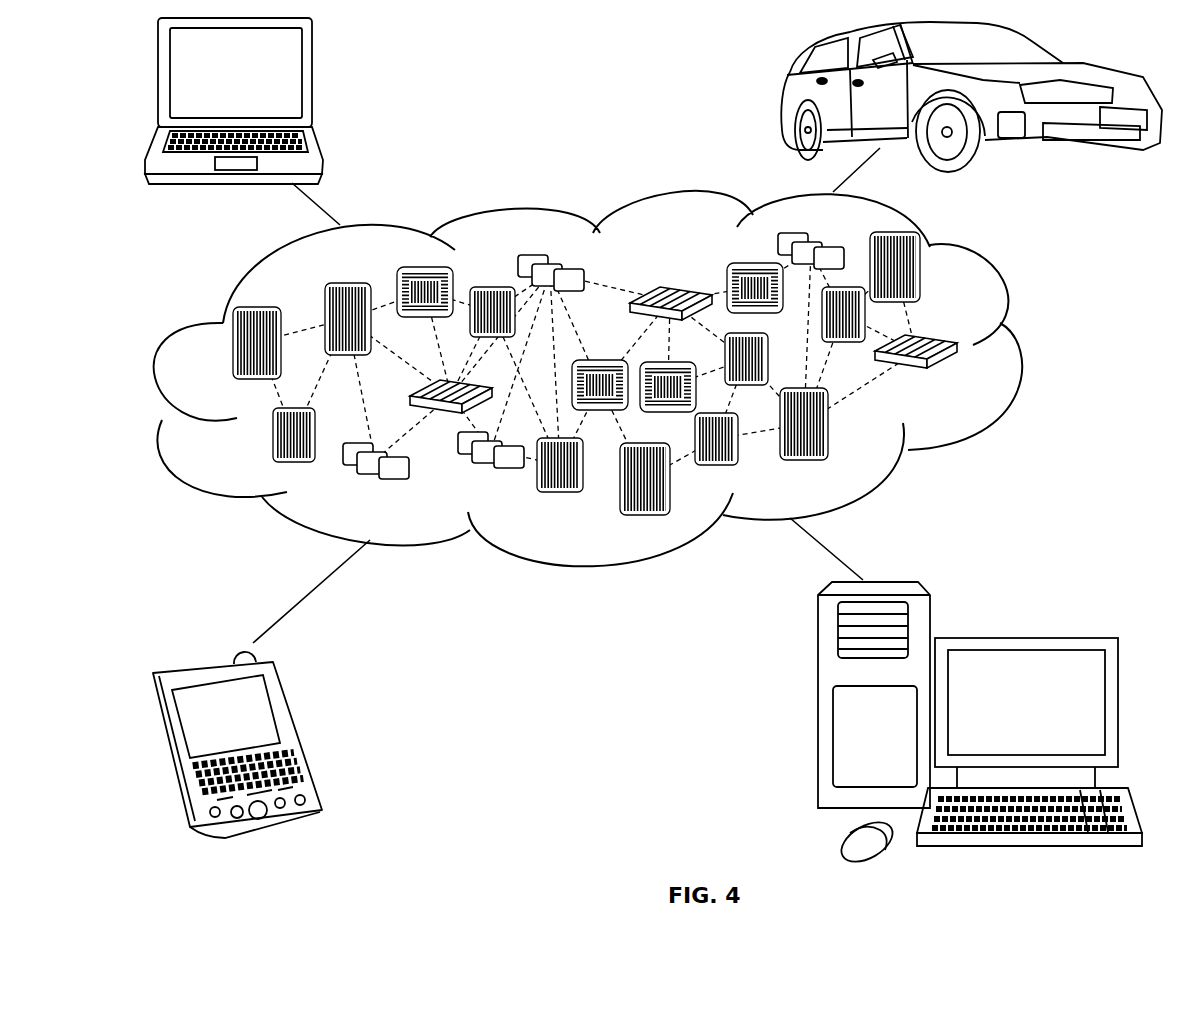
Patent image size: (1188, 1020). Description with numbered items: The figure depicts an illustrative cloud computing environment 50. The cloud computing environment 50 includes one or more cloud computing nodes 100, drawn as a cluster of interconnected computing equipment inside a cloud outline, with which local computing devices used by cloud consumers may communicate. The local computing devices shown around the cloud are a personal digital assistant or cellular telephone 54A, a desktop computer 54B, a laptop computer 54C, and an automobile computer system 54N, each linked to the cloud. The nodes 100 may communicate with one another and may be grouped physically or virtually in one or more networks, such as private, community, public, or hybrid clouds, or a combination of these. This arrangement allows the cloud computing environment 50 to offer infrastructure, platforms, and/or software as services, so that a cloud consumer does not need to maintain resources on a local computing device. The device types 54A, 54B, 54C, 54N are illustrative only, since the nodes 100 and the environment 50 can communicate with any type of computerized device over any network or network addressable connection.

The cloud computing environment 50 is at (1022, 353).
The cloud computing nodes 100 is at (964, 381).
The personal digital assistant or cellular telephone 54A is at (300, 731).
The desktop computer 54B is at (1024, 637).
The laptop computer 54C is at (312, 83).
The automobile computer system 54N is at (787, 98).